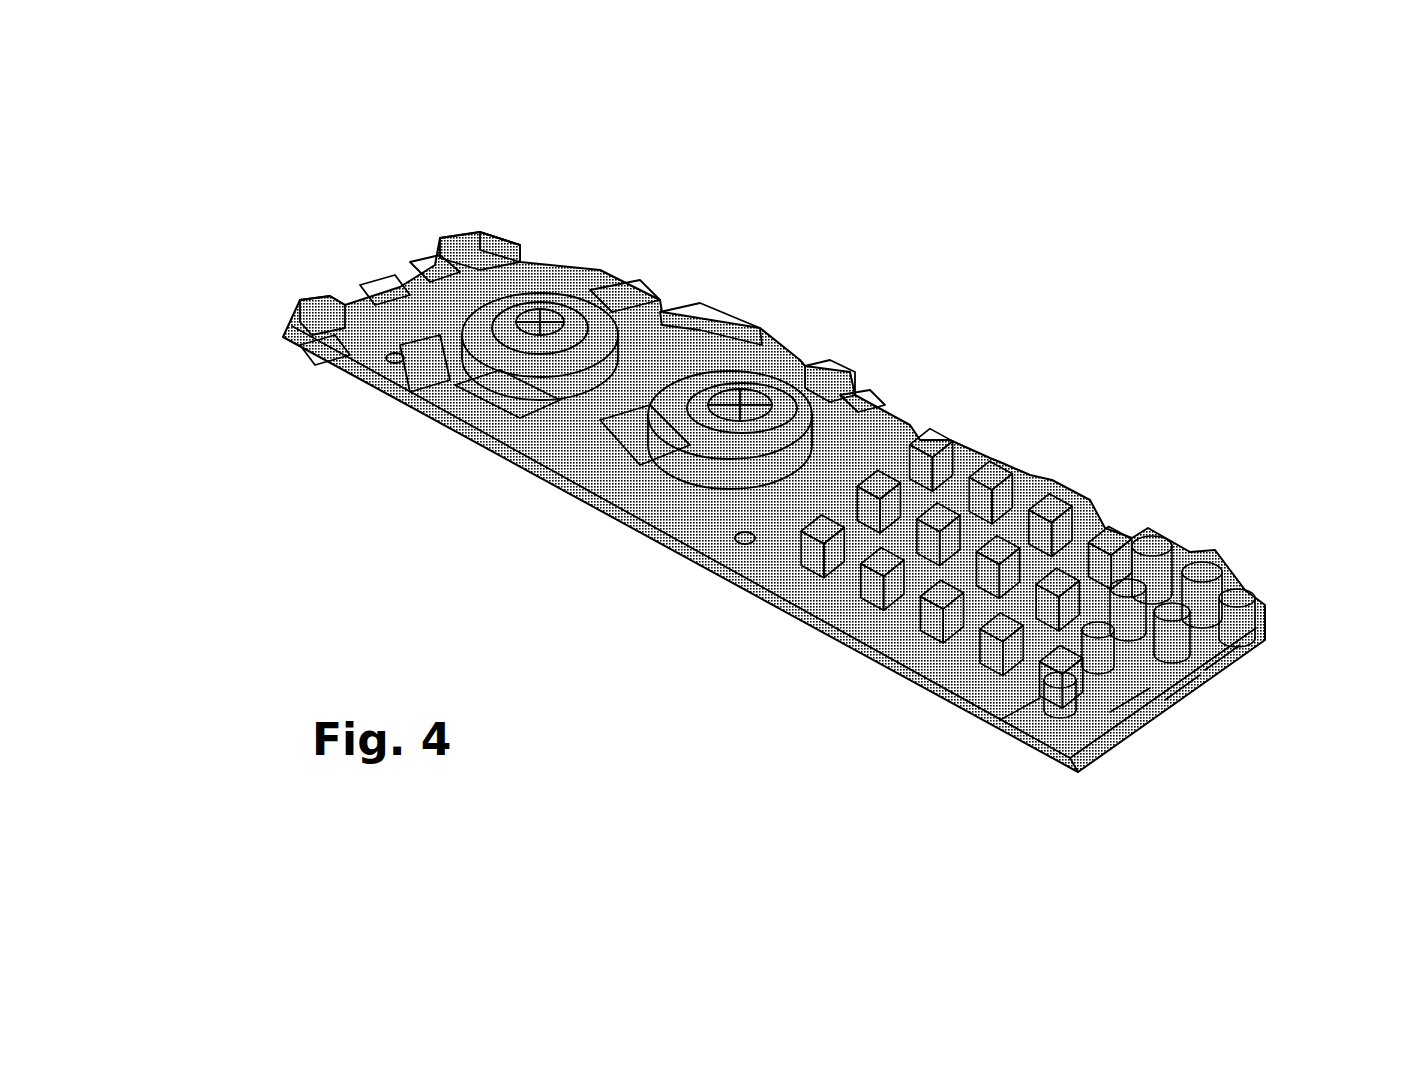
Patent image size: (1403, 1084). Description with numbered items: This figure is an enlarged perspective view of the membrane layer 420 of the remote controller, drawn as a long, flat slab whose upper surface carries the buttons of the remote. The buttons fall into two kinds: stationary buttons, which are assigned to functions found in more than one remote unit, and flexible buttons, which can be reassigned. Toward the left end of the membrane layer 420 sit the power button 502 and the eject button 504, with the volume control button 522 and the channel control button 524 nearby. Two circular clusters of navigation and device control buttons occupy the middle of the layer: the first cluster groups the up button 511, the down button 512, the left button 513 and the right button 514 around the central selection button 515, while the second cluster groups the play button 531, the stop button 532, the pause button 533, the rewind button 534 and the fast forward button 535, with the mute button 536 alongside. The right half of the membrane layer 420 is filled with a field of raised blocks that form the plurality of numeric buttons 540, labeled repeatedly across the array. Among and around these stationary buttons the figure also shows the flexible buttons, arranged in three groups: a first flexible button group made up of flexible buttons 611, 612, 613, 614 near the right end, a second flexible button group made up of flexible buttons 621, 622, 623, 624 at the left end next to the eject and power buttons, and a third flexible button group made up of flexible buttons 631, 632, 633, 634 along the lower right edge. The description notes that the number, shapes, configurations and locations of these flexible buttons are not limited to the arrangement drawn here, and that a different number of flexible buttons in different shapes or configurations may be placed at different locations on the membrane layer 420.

The membrane layer 420 is at (533, 478).
The power button 502 is at (470, 237).
The eject button 504 is at (313, 312).
The up button 511 is at (523, 273).
The down button 512 is at (643, 293).
The left button 513 is at (418, 392).
The right button 514 is at (600, 287).
The selection button 515 is at (558, 273).
The volume control button 522 is at (500, 420).
The channel control button 524 is at (697, 313).
The play button 531 is at (745, 400).
The stop button 532 is at (858, 408).
The pause button 533 is at (715, 365).
The rewind button 534 is at (650, 440).
The fast forward button 535 is at (785, 372).
The mute button 536 is at (830, 372).
The numeric buttons 540 is at (677, 540).
The flexible button 611 is at (960, 697).
The flexible button 612 is at (1147, 527).
The flexible button 613 is at (1140, 567).
The flexible button 614 is at (1183, 557).
The flexible button 621 is at (317, 363).
The flexible button 622 is at (380, 288).
The flexible button 623 is at (437, 263).
The flexible button 624 is at (500, 247).
The flexible button 631 is at (1025, 715).
The flexible button 632 is at (1130, 710).
The flexible button 633 is at (1183, 690).
The flexible button 634 is at (1222, 660).